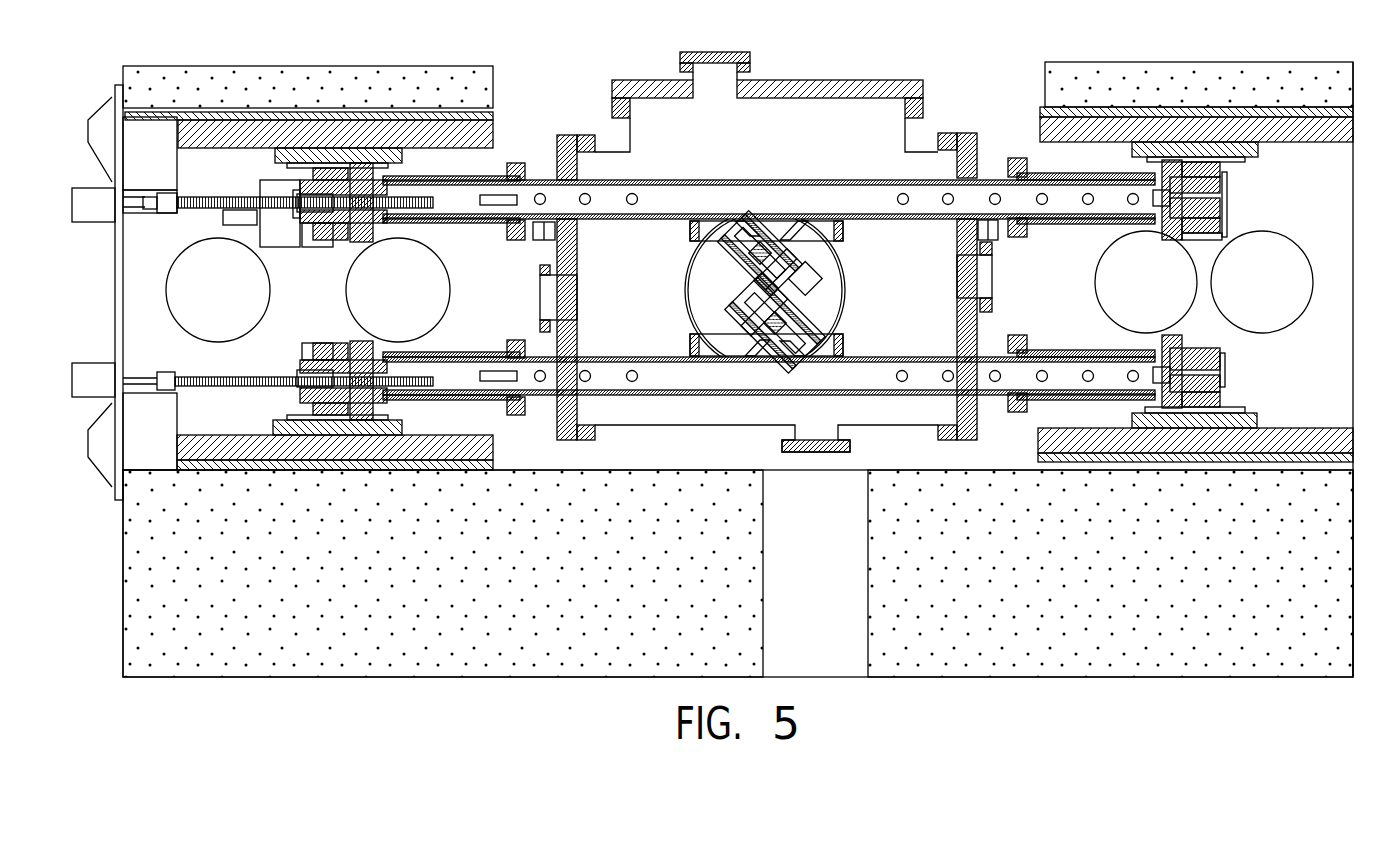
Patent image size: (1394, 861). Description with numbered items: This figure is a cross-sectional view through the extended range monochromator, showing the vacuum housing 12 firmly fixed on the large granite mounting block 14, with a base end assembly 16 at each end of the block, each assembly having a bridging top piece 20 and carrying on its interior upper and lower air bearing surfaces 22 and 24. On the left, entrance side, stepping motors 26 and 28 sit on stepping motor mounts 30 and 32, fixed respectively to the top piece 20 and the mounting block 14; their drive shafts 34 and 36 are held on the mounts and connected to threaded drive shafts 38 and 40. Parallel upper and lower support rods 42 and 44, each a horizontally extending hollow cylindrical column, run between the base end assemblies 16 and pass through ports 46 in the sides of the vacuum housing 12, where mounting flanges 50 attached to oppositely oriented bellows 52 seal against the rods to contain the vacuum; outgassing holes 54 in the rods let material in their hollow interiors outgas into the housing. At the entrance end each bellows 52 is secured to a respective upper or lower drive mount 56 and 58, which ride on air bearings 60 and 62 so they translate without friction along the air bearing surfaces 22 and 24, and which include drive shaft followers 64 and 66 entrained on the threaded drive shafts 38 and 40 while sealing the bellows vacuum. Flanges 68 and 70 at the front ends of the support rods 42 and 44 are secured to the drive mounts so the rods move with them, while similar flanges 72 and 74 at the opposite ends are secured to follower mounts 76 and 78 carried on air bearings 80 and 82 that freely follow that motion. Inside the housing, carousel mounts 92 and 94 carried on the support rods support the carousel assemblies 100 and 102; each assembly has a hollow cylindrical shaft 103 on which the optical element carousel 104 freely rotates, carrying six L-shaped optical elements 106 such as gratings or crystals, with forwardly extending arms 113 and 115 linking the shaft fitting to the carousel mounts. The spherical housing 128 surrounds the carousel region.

The vacuum housing 12 is at (912, 80).
The mounting block 14 is at (1353, 550).
The base end assemblies 16 is at (125, 66).
The top piece 20 is at (305, 67).
The upper air bearing surface 22 is at (212, 148).
The lower air bearing surface 24 is at (217, 435).
The stepping motor 26 is at (92, 222).
The stepping motor 28 is at (92, 363).
The stepping motor mount 30 is at (100, 108).
The stepping motor mount 32 is at (100, 470).
The drive shaft 34 is at (147, 210).
The drive shaft 36 is at (147, 376).
The threaded drive shaft 38 is at (196, 209).
The threaded drive shaft 40 is at (209, 377).
The upper support rod 42 is at (686, 180).
The lower support rod 44 is at (887, 357).
The ports 46 is at (577, 176).
The mounting flanges 50 is at (520, 164).
The bellows 52 is at (452, 223).
The outgassing holes 54 is at (626, 200).
The upper drive mount 56 is at (328, 240).
The lower drive mount 58 is at (312, 357).
The air bearing 60 is at (280, 153).
The air bearing 62 is at (276, 428).
The drive shaft follower 64 is at (300, 215).
The drive shaft follower 66 is at (300, 366).
The flange 68 is at (375, 182).
The flange 70 is at (385, 396).
The flange 72 is at (1153, 240).
The flange 74 is at (1152, 340).
The follower mount 76 is at (1228, 212).
The follower mount 78 is at (1226, 362).
The air bearing 80 is at (1257, 152).
The air bearing 82 is at (1257, 422).
The carousel mount 92 is at (690, 232).
The carousel mount 94 is at (690, 340).
The carousel assembly 100 is at (832, 257).
The carousel assembly 102 is at (830, 320).
The hollow cylindrical shaft 103 is at (803, 221).
The optical element carousel 104 is at (743, 221).
The optical elements 106 is at (748, 285).
The arm 113 is at (790, 262).
The arm 115 is at (732, 330).
The spherical housing 128 is at (686, 297).